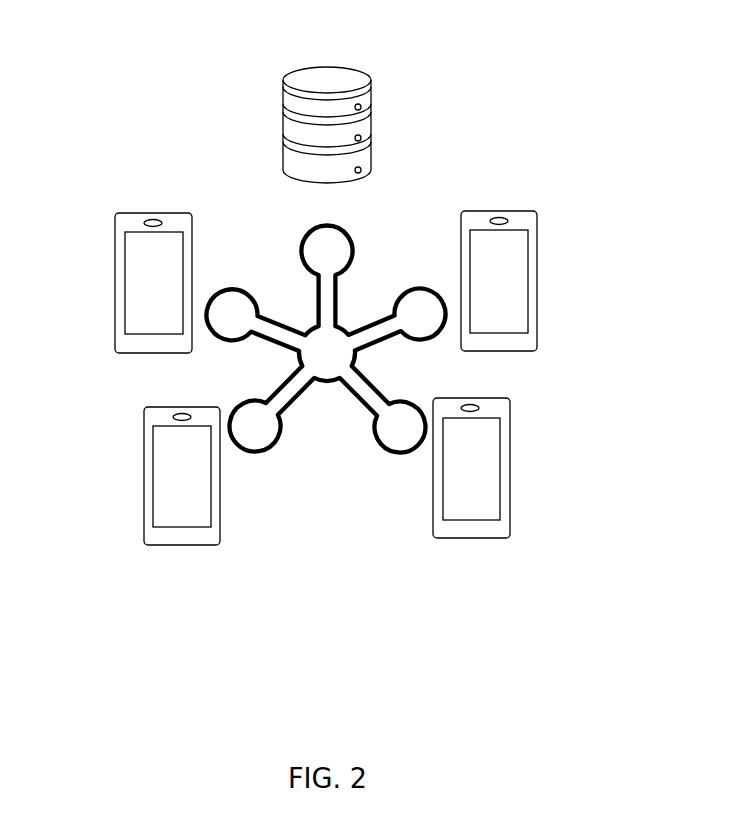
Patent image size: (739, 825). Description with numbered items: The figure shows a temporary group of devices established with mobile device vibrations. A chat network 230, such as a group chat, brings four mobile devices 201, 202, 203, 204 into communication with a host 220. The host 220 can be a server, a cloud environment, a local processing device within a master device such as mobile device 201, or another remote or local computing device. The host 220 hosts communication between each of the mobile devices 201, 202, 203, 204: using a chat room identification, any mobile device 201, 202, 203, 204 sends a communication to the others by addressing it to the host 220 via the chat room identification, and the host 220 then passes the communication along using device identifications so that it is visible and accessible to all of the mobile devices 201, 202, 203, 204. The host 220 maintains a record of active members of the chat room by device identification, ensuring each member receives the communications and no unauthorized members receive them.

The mobile device 201 is at (153, 205).
The mobile device 202 is at (142, 409).
The mobile device 203 is at (501, 202).
The mobile device 204 is at (511, 402).
The host 220 is at (330, 46).
The chat network 230 is at (324, 390).